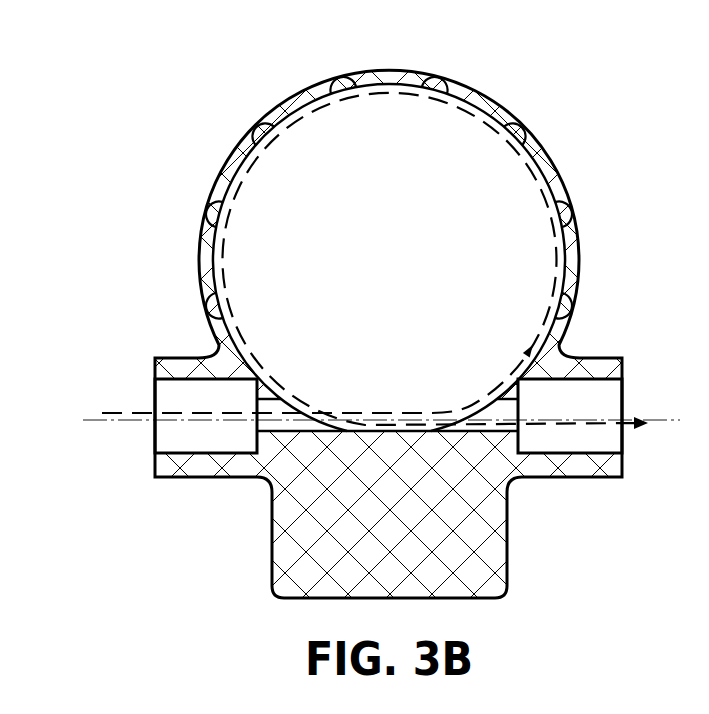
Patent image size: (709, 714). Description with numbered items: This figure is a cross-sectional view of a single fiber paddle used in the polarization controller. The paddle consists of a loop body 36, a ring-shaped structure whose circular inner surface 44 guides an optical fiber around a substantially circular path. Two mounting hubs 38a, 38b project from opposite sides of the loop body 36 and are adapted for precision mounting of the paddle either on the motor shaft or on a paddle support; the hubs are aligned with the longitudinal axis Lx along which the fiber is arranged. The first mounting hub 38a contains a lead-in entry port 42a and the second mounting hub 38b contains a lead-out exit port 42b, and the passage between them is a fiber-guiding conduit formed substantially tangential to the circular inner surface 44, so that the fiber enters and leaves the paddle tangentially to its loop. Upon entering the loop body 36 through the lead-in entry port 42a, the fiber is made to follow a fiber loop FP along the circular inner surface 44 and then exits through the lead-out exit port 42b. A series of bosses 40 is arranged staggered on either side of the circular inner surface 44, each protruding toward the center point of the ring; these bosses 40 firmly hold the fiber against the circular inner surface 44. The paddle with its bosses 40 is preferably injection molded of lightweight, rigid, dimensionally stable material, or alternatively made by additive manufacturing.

The loop body 36 is at (262, 122).
The mounting hub 38a is at (177, 365).
The mounting hub 38b is at (597, 368).
The bosses 40 is at (553, 207).
The lead-in entry port 42a is at (277, 405).
The lead-out exit port 42b is at (500, 403).
The circular inner surface 44 is at (213, 265).
The fiber loop FP is at (112, 410).
The longitudinal axis Lx is at (367, 418).